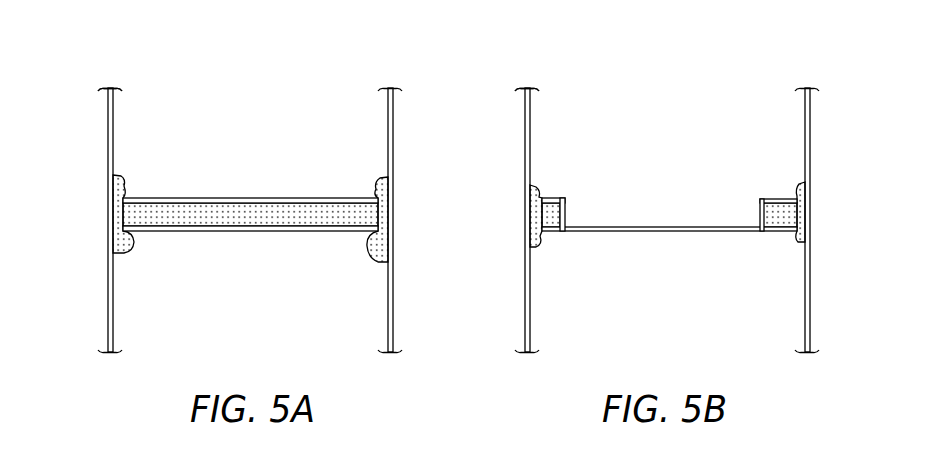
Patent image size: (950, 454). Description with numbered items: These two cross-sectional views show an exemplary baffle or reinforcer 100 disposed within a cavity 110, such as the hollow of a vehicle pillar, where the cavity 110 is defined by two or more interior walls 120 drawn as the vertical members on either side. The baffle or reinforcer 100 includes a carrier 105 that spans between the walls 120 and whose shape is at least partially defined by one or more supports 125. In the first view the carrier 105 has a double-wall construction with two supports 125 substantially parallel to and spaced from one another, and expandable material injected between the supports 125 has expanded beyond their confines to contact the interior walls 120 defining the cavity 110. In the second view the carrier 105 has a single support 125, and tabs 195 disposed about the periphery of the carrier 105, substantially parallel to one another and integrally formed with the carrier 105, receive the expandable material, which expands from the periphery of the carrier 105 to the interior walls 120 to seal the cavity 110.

In FIG. 5A, the baffle or reinforcer 100 is at (253, 193).
In FIG. 5B, the baffle or reinforcer 100 is at (669, 196).
In FIG. 5A, the carrier 105 is at (196, 234).
In FIG. 5B, the carrier 105 is at (616, 235).
In FIG. 5A, the cavity 110 is at (131, 81).
In FIG. 5B, the cavity 110 is at (549, 84).
In FIG. 5A, the walls 120 is at (108, 136).
In FIG. 5B, the walls 120 is at (525, 280).
In FIG. 5A, the supports 125 is at (312, 198).
In FIG. 5B, the supports 125 is at (677, 227).
In FIG. 5B, the tabs 195 is at (552, 200).